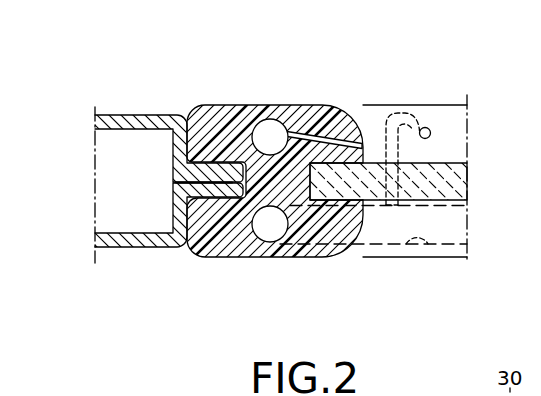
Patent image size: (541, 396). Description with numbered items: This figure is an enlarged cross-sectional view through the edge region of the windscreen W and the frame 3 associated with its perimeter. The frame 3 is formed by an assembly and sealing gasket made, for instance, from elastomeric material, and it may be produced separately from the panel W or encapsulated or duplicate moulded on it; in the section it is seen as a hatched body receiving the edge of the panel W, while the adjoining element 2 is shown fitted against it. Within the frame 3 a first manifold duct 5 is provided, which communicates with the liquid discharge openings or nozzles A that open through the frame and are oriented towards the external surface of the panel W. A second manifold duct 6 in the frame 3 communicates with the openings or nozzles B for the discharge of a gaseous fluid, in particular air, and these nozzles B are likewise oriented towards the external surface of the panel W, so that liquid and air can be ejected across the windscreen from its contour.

The tube 2 is at (131, 114).
The frame 3 is at (435, 100).
The first manifold duct 5 is at (256, 130).
The second manifold duct 6 is at (267, 233).
The liquid discharge openings or nozzles A is at (363, 146).
The gaseous fluid discharge openings or nozzles B is at (430, 131).
The windscreen W is at (445, 162).